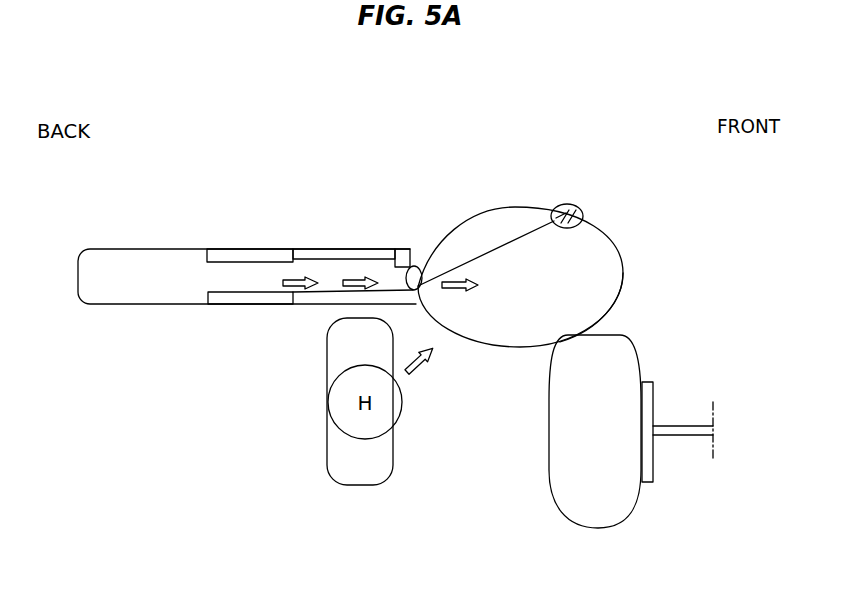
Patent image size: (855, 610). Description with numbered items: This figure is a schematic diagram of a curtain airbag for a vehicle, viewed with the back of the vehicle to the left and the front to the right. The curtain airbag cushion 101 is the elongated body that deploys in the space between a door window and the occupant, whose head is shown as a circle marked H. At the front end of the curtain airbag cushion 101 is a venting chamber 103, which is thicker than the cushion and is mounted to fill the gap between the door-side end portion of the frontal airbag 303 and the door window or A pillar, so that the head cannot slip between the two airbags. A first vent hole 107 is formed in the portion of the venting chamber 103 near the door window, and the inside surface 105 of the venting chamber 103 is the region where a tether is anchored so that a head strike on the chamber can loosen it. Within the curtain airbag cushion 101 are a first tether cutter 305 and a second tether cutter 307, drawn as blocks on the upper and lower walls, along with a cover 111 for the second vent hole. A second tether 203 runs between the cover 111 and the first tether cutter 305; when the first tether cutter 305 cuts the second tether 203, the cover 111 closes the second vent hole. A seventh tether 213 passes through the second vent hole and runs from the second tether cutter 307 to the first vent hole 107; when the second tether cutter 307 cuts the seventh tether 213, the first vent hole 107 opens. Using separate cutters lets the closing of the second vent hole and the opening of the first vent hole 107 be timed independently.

The curtain airbag cushion 101 is at (117, 248).
The first tether cutter 305 is at (228, 255).
The second tether 203 is at (340, 252).
The cover 111 is at (400, 250).
The second tether cutter 307 is at (226, 305).
The seventh tether 213 is at (328, 300).
The venting chamber 103 is at (488, 222).
The first vent hole 107 is at (566, 205).
The inside surface 105 is at (618, 302).
The frontal airbag 303 is at (598, 528).